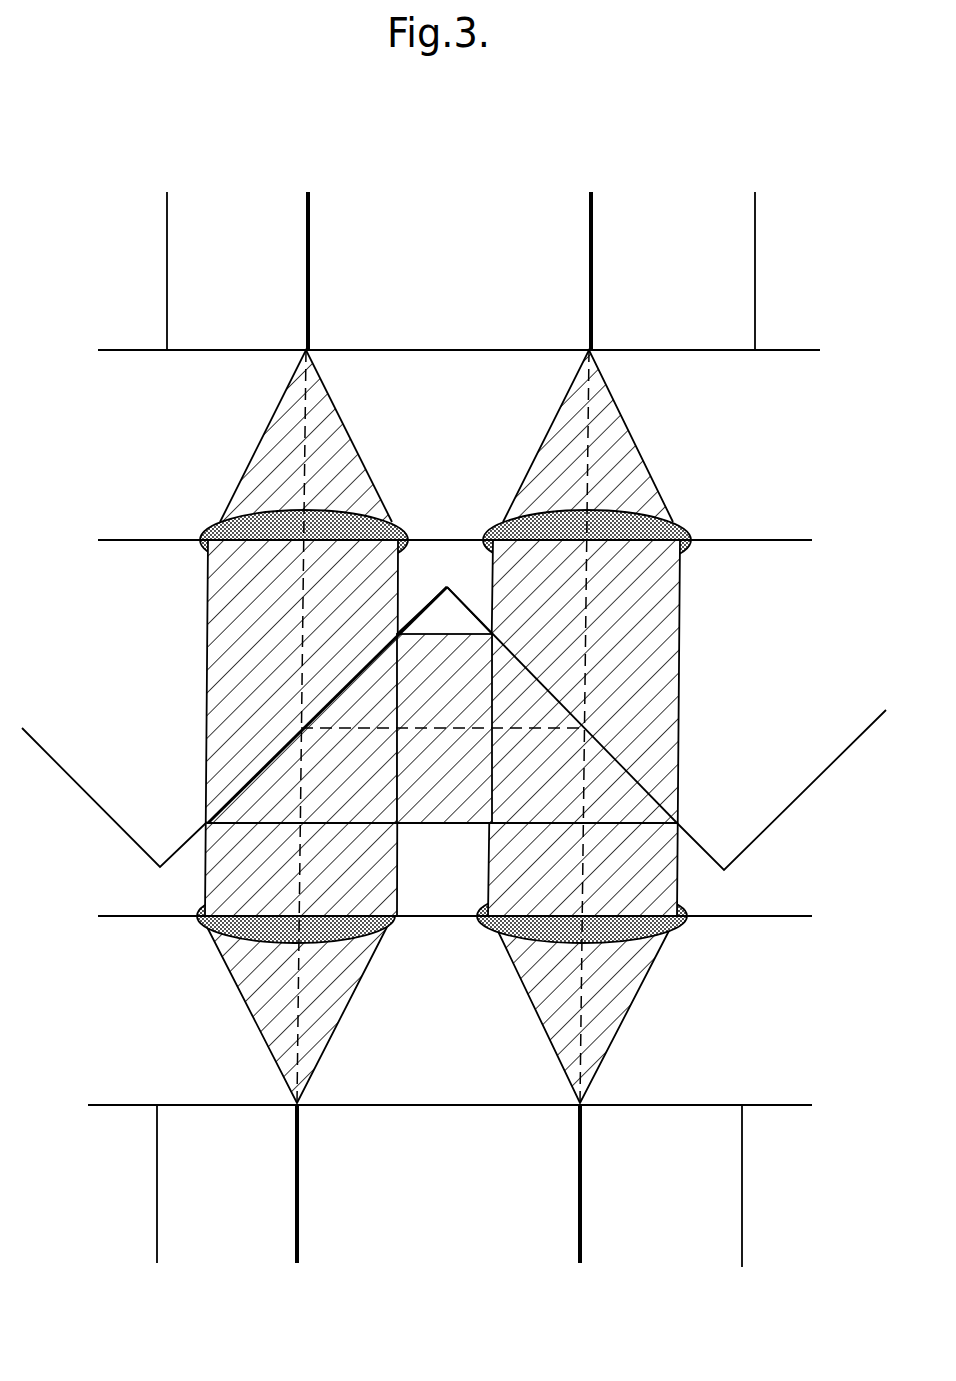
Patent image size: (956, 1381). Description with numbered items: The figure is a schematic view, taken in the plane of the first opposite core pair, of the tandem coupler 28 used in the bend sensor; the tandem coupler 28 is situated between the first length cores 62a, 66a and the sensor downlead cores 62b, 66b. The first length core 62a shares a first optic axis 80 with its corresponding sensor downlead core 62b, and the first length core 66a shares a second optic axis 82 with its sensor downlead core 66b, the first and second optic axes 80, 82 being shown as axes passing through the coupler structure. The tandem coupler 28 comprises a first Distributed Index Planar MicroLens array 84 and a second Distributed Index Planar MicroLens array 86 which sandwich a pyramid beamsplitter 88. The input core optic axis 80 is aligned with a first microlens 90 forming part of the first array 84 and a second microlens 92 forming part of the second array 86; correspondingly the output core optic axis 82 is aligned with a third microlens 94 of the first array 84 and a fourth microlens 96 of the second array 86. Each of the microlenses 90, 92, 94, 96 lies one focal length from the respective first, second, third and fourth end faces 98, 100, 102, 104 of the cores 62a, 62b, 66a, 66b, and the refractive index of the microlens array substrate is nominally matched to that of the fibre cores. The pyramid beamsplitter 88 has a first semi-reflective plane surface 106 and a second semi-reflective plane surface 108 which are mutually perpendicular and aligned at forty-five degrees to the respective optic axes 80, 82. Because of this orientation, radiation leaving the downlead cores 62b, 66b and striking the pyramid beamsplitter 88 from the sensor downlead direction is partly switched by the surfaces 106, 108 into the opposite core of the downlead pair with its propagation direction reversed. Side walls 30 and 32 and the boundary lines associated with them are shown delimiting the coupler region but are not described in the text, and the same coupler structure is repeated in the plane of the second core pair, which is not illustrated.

The tandem coupler 28 is at (121, 336).
The upper side wall 30 is at (755, 283).
The lower side wall 32 is at (743, 1196).
The first length core 62a is at (310, 237).
The sensor downlead core 62b is at (298, 1230).
The first length core 66a is at (590, 228).
The sensor downlead core 66b is at (582, 1218).
The first optic axis 80 is at (303, 467).
The second optic axis 82 is at (591, 473).
The first Distributed Index Planar MicroLens array 84 is at (690, 425).
The second Distributed Index Planar MicroLens array 86 is at (763, 957).
The pyramid beamsplitter 88 is at (816, 783).
The first microlens 90 is at (222, 520).
The second microlens 92 is at (232, 930).
The third microlens 94 is at (506, 520).
The fourth microlens 96 is at (507, 930).
The first end face 98 is at (277, 354).
The second end face 100 is at (293, 1103).
The third end face 102 is at (587, 354).
The fourth end face 104 is at (583, 1103).
The first semi-reflective plane surface 106 is at (238, 788).
The second semi-reflective plane surface 108 is at (637, 773).